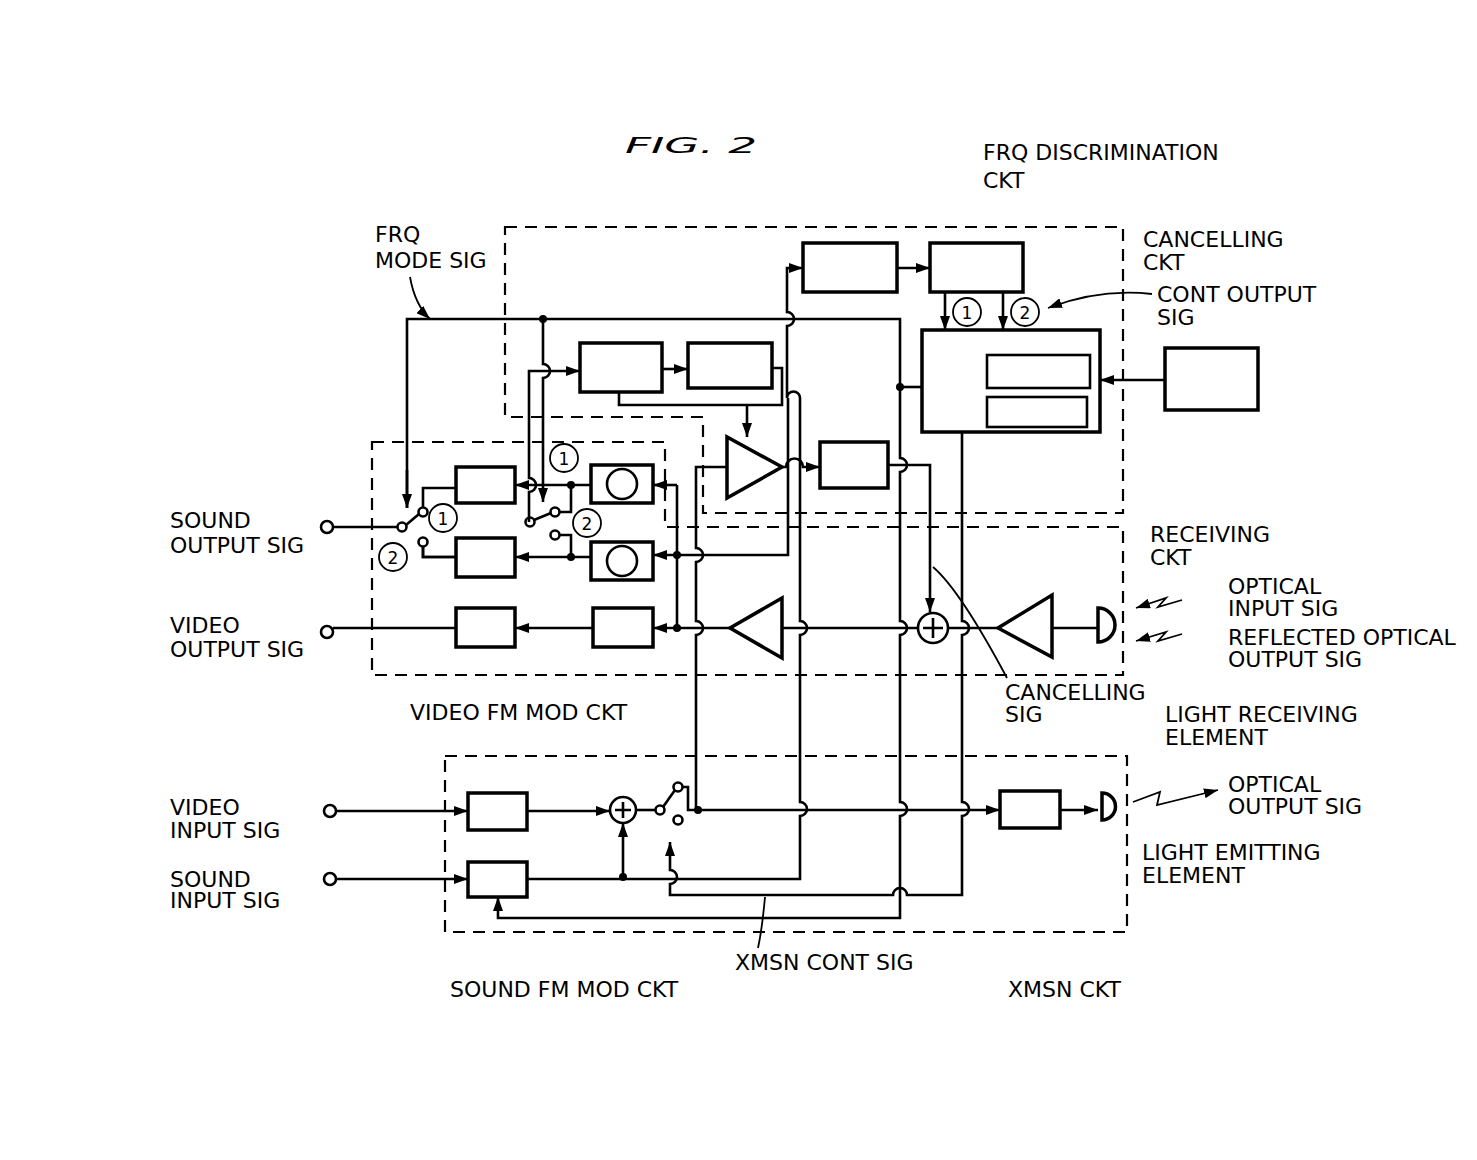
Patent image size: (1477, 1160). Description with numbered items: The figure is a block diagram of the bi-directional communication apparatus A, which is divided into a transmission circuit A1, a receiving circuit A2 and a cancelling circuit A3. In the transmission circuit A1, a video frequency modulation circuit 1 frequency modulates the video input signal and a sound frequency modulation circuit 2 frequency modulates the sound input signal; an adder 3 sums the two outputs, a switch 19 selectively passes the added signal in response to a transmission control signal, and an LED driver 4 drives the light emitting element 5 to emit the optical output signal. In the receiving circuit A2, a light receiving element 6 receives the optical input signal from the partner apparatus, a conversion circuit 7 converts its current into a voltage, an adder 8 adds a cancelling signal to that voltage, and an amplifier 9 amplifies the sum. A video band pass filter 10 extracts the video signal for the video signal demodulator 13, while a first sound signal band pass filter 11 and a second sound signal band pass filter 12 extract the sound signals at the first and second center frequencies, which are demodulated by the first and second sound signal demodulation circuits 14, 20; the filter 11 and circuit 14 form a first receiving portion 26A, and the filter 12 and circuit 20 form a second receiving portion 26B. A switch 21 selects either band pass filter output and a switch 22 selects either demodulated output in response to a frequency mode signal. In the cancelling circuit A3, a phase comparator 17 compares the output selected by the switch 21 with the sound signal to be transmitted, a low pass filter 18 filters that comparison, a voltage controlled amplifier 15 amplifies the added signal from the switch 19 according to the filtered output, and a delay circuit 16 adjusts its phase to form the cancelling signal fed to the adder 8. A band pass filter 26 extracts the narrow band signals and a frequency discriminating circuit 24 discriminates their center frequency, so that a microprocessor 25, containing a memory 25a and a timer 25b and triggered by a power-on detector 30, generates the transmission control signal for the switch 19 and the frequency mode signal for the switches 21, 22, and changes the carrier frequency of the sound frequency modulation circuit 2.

The video frequency modulation circuit 1 is at (470, 793).
The sound frequency modulation circuit 2 is at (488, 898).
The adder 3 is at (632, 798).
The LED driver 4 is at (1030, 828).
The light emitting element 5 is at (1112, 822).
The light receiving element 6 is at (1110, 645).
The conversion circuit 7 is at (1024, 603).
The adder 8 is at (935, 643).
The amplifier 9 is at (748, 612).
The video band pass filter 10 is at (632, 647).
The first sound signal band pass filter 11 is at (618, 542).
The second sound signal band pass filter 12 is at (618, 466).
The video signal demodulator 13 is at (480, 647).
The first sound signal demodulation circuit 14 is at (480, 578).
The voltage controlled amplifier 15 is at (755, 454).
The delay circuit 16 is at (852, 442).
The phase comparator 17 is at (641, 343).
The low pass filter 18 is at (752, 343).
The switch 19 is at (686, 823).
The second sound signal demodulation circuit 20 is at (480, 467).
The switch 21 is at (538, 541).
The switch 22 is at (392, 513).
The frequency discriminating circuit 24 is at (992, 243).
The microprocessor 25 is at (1010, 433).
The memory 25a is at (1075, 357).
The timer 25b is at (1090, 416).
The band pass filter 26 is at (803, 252).
The first receiving portion 26A is at (452, 569).
The second receiving portion 26B is at (443, 462).
The power-on detector 30 is at (1258, 368).
The apparatus A is at (788, 188).
The transmission circuit A1 is at (985, 932).
The receiving circuit A2 is at (1128, 530).
The cancelling circuit A3 is at (1123, 230).